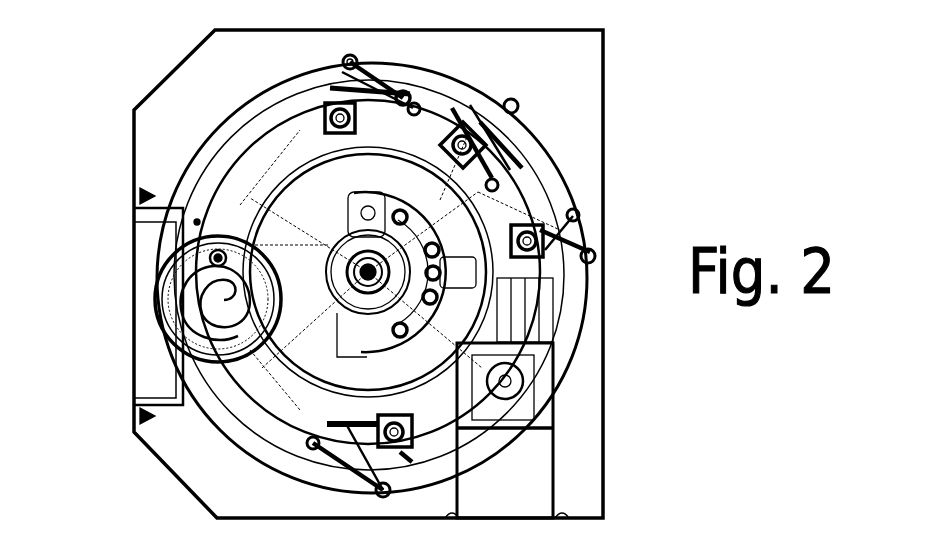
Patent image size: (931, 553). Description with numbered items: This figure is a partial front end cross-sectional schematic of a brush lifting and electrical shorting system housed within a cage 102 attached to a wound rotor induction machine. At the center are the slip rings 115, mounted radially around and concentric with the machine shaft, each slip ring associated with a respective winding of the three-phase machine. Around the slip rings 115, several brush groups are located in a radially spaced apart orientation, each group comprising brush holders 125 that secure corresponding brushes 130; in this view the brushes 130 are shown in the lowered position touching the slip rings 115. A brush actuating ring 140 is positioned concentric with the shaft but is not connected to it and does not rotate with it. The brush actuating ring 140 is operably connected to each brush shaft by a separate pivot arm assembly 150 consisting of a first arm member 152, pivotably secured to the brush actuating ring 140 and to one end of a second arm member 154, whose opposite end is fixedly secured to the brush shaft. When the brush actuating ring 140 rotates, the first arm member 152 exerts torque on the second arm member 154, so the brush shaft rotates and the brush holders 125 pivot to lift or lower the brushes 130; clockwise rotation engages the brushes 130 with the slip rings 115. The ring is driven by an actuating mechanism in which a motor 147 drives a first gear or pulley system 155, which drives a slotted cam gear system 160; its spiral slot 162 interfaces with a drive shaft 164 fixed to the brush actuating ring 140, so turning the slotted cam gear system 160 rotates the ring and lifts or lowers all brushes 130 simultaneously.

The cage 102 is at (170, 470).
The slip rings 115 is at (392, 207).
The brush holders 125 is at (352, 150).
The brushes 130 is at (452, 108).
The brush actuating ring 140 is at (245, 140).
The motor 147 is at (545, 323).
The pivot arm assembly 150 is at (349, 66).
The first arm member 152 is at (387, 82).
The second arm member 154 is at (345, 66).
The first gear or pulley system 155 is at (365, 310).
The slotted cam gear system 160 is at (165, 306).
The spiral slot 162 is at (170, 345).
The drive shaft 164 is at (180, 235).